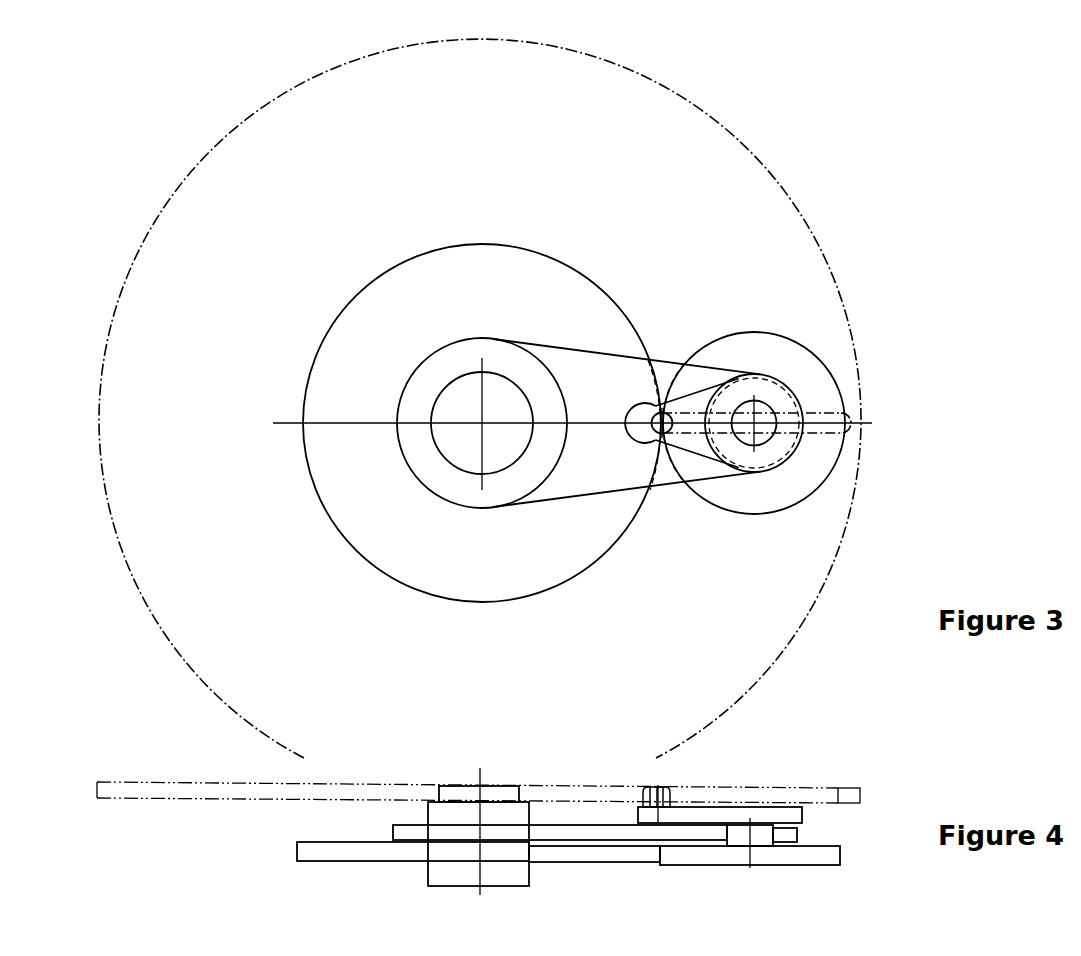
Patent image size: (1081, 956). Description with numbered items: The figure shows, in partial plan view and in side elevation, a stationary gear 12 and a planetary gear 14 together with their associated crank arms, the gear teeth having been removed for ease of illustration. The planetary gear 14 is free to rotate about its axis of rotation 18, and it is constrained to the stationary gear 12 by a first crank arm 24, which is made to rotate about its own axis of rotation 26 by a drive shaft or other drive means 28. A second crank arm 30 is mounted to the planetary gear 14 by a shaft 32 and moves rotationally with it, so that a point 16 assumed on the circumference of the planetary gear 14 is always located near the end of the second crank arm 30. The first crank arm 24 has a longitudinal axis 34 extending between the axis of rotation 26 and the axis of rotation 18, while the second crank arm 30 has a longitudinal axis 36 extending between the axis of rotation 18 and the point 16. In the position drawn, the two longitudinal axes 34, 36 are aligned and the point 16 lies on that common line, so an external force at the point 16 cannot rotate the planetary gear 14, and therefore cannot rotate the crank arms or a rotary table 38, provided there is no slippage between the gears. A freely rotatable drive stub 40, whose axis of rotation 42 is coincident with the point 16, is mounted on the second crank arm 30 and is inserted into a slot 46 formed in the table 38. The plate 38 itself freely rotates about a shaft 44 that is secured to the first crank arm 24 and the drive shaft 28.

In FIG. 3, the stationary gear 12 is at (569, 560).
In FIG. 4, the stationary gear 12 is at (592, 855).
In FIG. 3, the planetary gear 14 is at (758, 510).
In FIG. 4, the planetary gear 14 is at (685, 855).
In FIG. 3, the point 16 is at (663, 452).
In FIG. 4, the point 16 is at (668, 785).
In FIG. 3, the axis of rotation 18 is at (768, 412).
In FIG. 4, the axis of rotation 18 is at (755, 857).
In FIG. 3, the crank arm 24 is at (618, 372).
In FIG. 4, the crank arm 24 is at (552, 835).
In FIG. 3, the axis of rotation 26 is at (482, 423).
In FIG. 4, the axis of rotation 26 is at (482, 778).
In FIG. 4, the drive shaft 28 is at (437, 874).
In FIG. 3, the second crank arm 30 is at (715, 398).
In FIG. 4, the second crank arm 30 is at (802, 818).
In FIG. 4, the shaft 32 is at (795, 835).
In FIG. 3, the longitudinal axis 34 is at (560, 423).
In FIG. 3, the longitudinal axis 36 is at (702, 428).
In FIG. 3, the rotary table 38 is at (777, 648).
In FIG. 4, the rotary table 38 is at (748, 793).
In FIG. 3, the drive stub 40 is at (654, 440).
In FIG. 4, the drive stub 40 is at (672, 788).
In FIG. 4, the axis of rotation 42 is at (644, 788).
In FIG. 3, the shaft 44 is at (510, 452).
In FIG. 4, the shaft 44 is at (460, 792).
In FIG. 3, the slot 46 is at (834, 417).